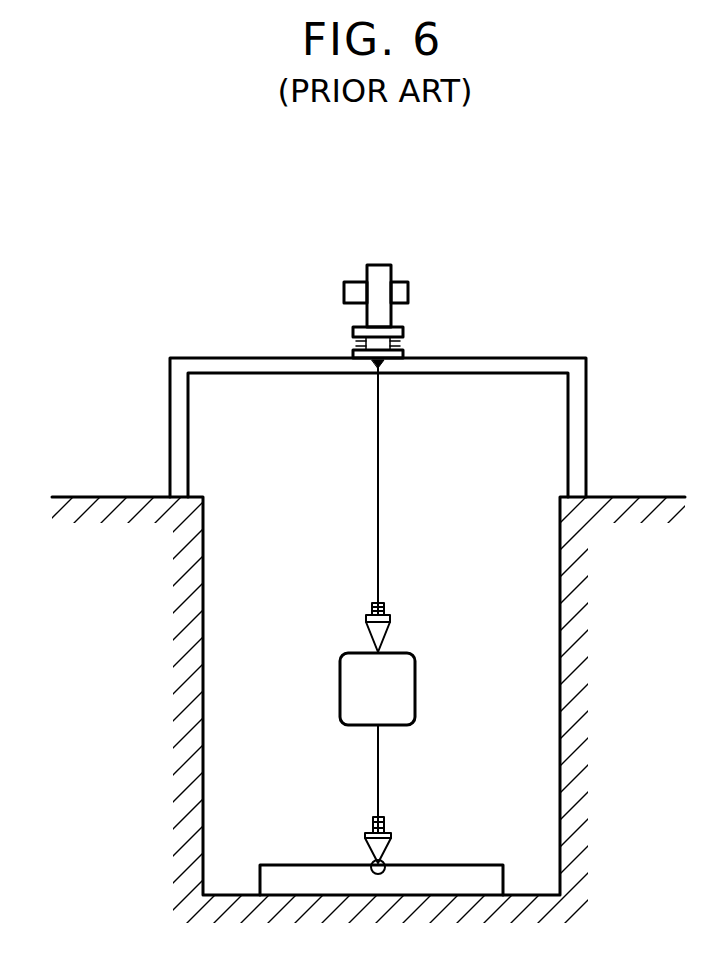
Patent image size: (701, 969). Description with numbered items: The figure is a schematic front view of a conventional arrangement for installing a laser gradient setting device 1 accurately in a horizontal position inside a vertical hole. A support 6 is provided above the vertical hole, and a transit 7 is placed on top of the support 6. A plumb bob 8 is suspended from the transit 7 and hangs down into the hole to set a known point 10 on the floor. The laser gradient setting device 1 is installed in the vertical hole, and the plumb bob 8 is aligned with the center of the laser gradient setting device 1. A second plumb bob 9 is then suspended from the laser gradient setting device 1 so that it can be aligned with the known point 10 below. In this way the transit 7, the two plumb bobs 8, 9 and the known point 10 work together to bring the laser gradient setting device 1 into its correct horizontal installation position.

The laser gradient setting device 1 is at (340, 683).
The support 6 is at (508, 365).
The transit 7 is at (381, 262).
The plumb bob 8 is at (378, 530).
The plumb bob 9 is at (378, 755).
The known point 10 is at (370, 862).